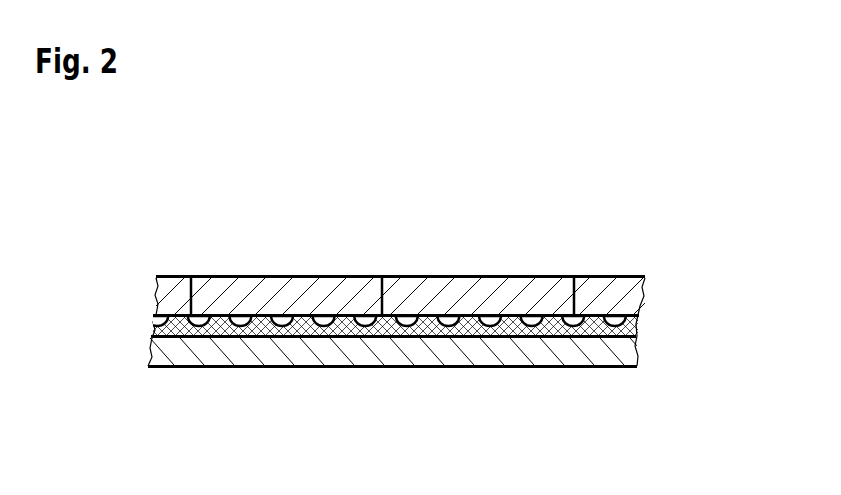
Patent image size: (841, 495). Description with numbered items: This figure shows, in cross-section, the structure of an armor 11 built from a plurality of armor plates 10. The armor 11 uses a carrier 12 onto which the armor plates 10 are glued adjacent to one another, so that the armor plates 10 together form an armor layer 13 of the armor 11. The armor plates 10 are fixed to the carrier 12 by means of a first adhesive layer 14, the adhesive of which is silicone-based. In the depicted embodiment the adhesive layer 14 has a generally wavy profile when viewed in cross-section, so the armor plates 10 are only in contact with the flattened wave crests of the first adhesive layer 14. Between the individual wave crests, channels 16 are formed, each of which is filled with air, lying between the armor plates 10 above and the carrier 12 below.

The armor plates 10 is at (182, 276).
The armor 11 is at (584, 190).
The carrier 12 is at (252, 358).
The armor layer 13 is at (650, 295).
The first adhesive layer 14 is at (357, 339).
The channels 16 is at (240, 314).